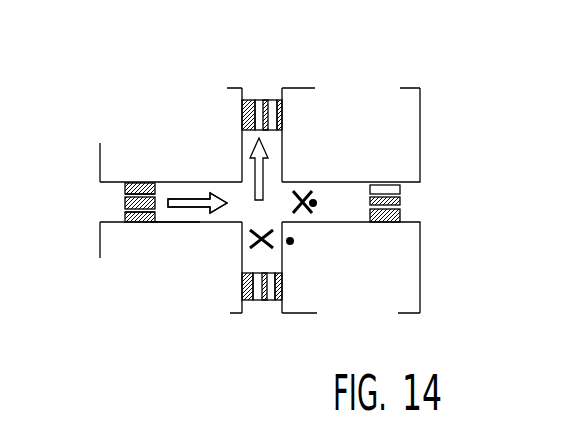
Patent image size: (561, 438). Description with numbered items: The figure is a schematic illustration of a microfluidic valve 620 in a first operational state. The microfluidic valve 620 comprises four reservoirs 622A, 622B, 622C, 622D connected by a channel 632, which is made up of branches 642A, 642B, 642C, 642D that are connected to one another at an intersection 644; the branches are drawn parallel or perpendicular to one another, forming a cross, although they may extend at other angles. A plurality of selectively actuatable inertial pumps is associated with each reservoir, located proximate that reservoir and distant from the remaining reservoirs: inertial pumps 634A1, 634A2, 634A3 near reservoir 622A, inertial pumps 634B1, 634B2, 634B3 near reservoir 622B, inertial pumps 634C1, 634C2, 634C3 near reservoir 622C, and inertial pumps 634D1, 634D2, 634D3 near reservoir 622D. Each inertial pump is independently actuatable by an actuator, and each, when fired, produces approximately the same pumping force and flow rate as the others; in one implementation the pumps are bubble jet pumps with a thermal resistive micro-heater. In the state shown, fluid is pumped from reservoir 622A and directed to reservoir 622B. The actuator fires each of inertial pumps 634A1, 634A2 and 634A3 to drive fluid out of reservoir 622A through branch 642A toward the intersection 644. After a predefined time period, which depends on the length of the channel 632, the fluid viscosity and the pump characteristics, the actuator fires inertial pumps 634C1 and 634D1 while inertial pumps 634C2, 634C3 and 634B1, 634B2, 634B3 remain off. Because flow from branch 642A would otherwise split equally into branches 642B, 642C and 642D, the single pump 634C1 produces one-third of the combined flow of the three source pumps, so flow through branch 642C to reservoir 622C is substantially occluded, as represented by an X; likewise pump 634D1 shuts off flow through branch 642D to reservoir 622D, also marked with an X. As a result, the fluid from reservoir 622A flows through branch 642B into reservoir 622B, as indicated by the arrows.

The microfluidic valve 620 is at (110, 77).
The reservoir 622A is at (98, 157).
The reservoir 622B is at (300, 88).
The reservoir 622C is at (295, 314).
The reservoir 622D is at (420, 247).
The channel 632 is at (168, 235).
The inertial pump 634A1 is at (142, 224).
The inertial pump 634A2 is at (149, 226).
The inertial pump 634A3 is at (140, 183).
The inertial pump 634B1 is at (240, 116).
The inertial pump 634B2 is at (262, 100).
The inertial pump 634B3 is at (283, 120).
The inertial pump 634C1 is at (242, 292).
The inertial pump 634C2 is at (257, 301).
The inertial pump 634C3 is at (283, 282).
The inertial pump 634D1 is at (385, 223).
The inertial pump 634D2 is at (400, 199).
The inertial pump 634D3 is at (387, 185).
The branch 642A is at (197, 225).
The branch 642B is at (286, 173).
The branch 642C is at (292, 247).
The branch 642D is at (368, 224).
The intersection 644 is at (240, 182).